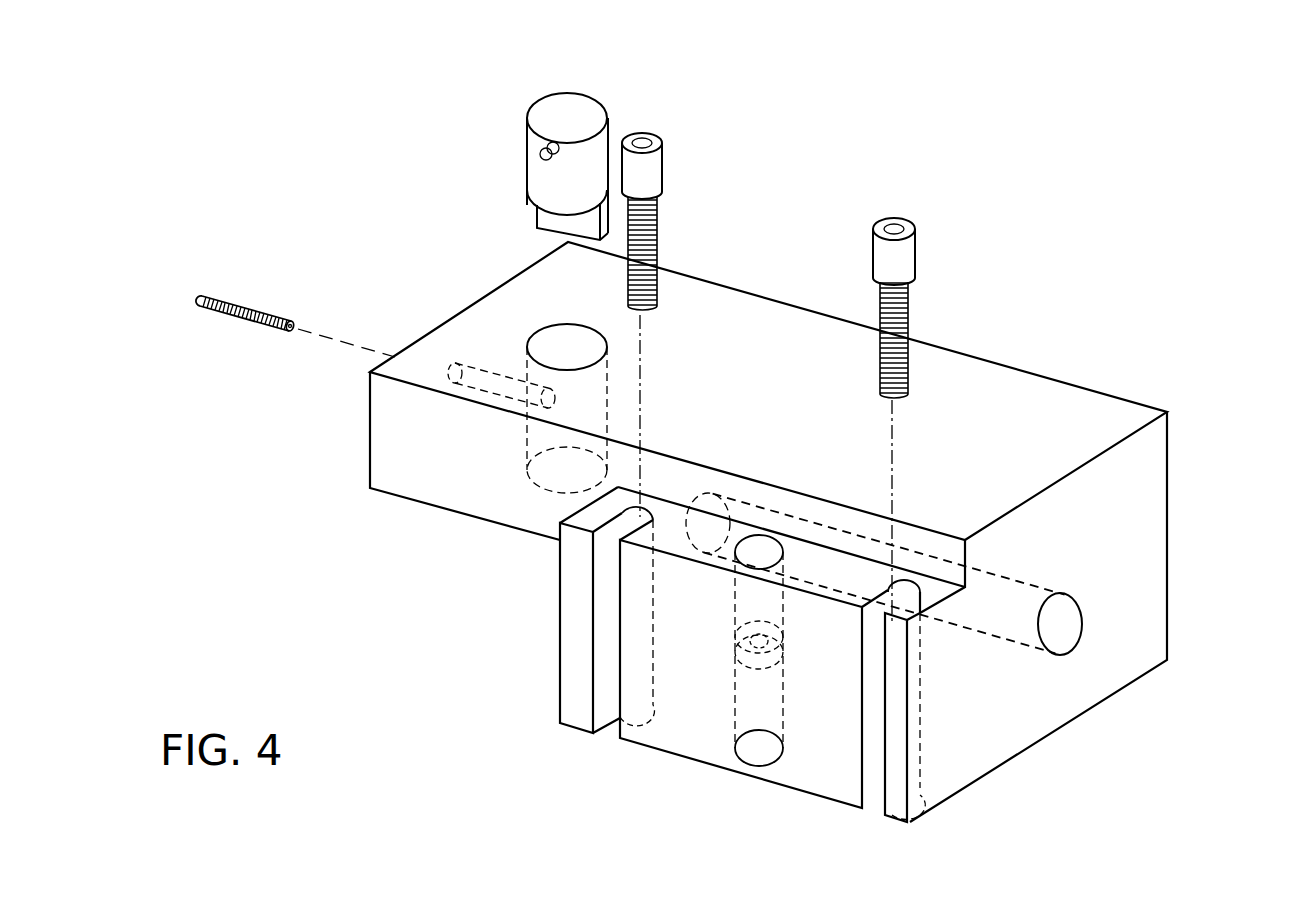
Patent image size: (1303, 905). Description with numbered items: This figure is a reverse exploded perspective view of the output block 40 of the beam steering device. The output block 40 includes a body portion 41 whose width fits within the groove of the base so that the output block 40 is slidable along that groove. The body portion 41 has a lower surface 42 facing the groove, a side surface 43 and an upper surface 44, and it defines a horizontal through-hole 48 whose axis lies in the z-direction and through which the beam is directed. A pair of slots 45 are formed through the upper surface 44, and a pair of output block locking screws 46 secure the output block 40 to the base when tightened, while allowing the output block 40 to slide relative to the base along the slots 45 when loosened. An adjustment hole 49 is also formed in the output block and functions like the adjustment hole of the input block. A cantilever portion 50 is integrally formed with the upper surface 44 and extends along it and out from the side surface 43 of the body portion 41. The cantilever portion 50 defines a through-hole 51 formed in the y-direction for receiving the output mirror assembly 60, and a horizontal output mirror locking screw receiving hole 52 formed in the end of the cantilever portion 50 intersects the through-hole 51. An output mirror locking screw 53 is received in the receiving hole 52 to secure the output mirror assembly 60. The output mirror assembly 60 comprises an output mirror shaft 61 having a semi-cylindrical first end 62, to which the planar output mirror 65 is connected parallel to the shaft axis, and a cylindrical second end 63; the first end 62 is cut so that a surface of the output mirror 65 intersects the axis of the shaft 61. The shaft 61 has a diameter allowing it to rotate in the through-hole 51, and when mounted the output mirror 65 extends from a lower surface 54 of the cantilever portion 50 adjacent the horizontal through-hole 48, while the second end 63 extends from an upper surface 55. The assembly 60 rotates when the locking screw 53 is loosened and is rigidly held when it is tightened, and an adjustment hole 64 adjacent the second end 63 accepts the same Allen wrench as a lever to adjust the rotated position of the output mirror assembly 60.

The output block 40 is at (1220, 546).
The body portion 41 is at (1025, 750).
The lower surface 42 is at (760, 783).
The side surface 43 is at (560, 687).
The upper surface 44 is at (885, 614).
The slots 45 is at (875, 612).
The output block locking screws 46 is at (643, 132).
The horizontal through-hole 48 is at (1062, 630).
The adjustment hole 49 is at (737, 570).
The cantilever portion 50 is at (427, 328).
The through-hole 51 is at (573, 373).
The output mirror locking screw receiving hole 52 is at (478, 392).
The output mirror locking screw 53 is at (232, 300).
The lower surface 54 is at (410, 503).
The upper surface 55 is at (1035, 390).
The output mirror assembly 60 is at (491, 152).
The output mirror shaft 61 is at (527, 160).
The semi-cylindrical first end 62 is at (538, 212).
The cylindrical second end 63 is at (573, 107).
The adjustment hole 64 is at (538, 153).
The output mirror 65 is at (562, 228).